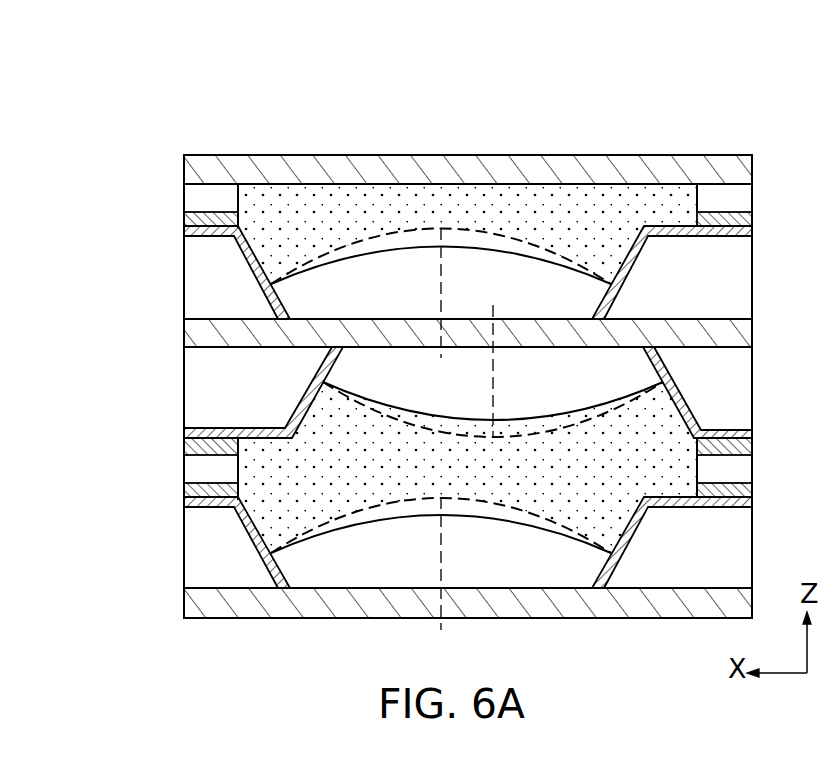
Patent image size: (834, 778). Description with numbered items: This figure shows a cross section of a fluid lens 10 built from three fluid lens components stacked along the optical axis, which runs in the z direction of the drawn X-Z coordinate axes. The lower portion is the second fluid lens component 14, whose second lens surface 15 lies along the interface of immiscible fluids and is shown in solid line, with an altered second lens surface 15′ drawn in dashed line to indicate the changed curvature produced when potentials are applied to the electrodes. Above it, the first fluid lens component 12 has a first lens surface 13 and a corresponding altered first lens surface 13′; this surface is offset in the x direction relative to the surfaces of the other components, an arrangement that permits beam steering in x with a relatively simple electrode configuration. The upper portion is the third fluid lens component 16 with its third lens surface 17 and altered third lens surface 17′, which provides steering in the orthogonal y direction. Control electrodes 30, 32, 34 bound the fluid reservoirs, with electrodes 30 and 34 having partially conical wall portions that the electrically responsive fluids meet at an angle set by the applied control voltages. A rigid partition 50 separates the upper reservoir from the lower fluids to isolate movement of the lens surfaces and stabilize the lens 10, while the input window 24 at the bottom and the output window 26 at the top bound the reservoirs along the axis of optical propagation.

The fluid lens 10 is at (712, 128).
The first fluid lens component 12 is at (162, 390).
The first lens surface 13 is at (548, 415).
The altered first lens surface 13′ is at (565, 428).
The second fluid lens component 14 is at (162, 553).
The second lens surface 15 is at (512, 525).
The altered second lens surface 15′ is at (517, 510).
The third fluid lens component 16 is at (162, 278).
The third lens surface 17 is at (493, 248).
The altered third lens surface 17′ is at (515, 240).
The input window 24 is at (608, 610).
The output window 26 is at (598, 165).
The control electrode 30 is at (683, 391).
The control electrode 32 is at (743, 197).
The control electrode 34 is at (627, 279).
The rigid partition 50 is at (750, 335).